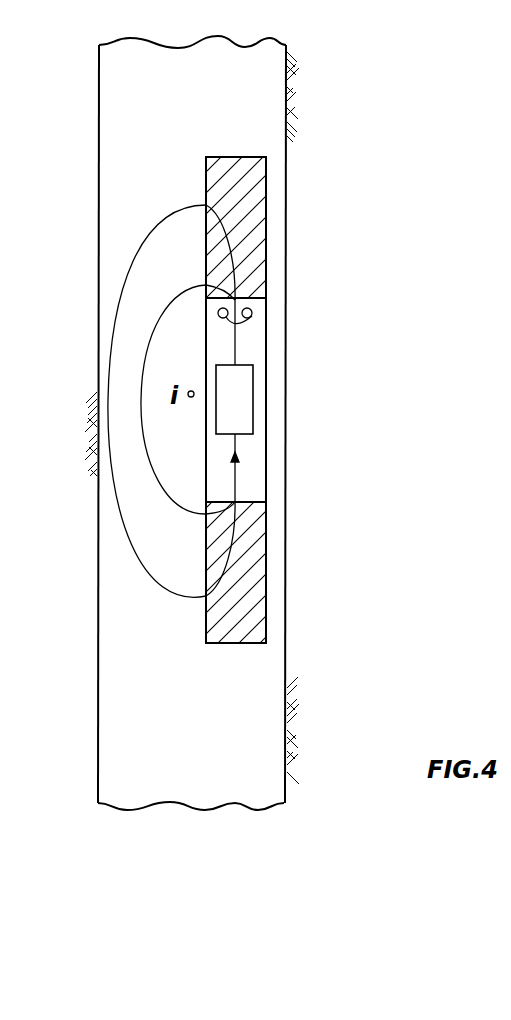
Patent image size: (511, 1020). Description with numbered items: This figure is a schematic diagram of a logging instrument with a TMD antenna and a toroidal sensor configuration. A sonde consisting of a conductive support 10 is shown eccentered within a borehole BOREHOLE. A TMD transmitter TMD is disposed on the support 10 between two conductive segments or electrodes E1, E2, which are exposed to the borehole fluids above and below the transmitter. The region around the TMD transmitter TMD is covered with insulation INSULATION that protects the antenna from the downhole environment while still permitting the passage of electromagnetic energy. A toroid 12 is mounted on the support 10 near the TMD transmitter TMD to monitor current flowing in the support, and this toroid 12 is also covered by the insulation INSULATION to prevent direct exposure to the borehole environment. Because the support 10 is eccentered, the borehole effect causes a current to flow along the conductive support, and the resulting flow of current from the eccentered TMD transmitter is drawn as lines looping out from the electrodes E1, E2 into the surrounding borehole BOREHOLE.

The support 10 is at (354, 382).
The first conductive segment or electrode E1 is at (266, 237).
The second conductive segment or electrode E2 is at (266, 558).
The toroid 12 is at (252, 316).
The insulation INSULATION is at (258, 347).
The TMD transmitter TMD is at (254, 423).
The borehole BOREHOLE is at (286, 635).